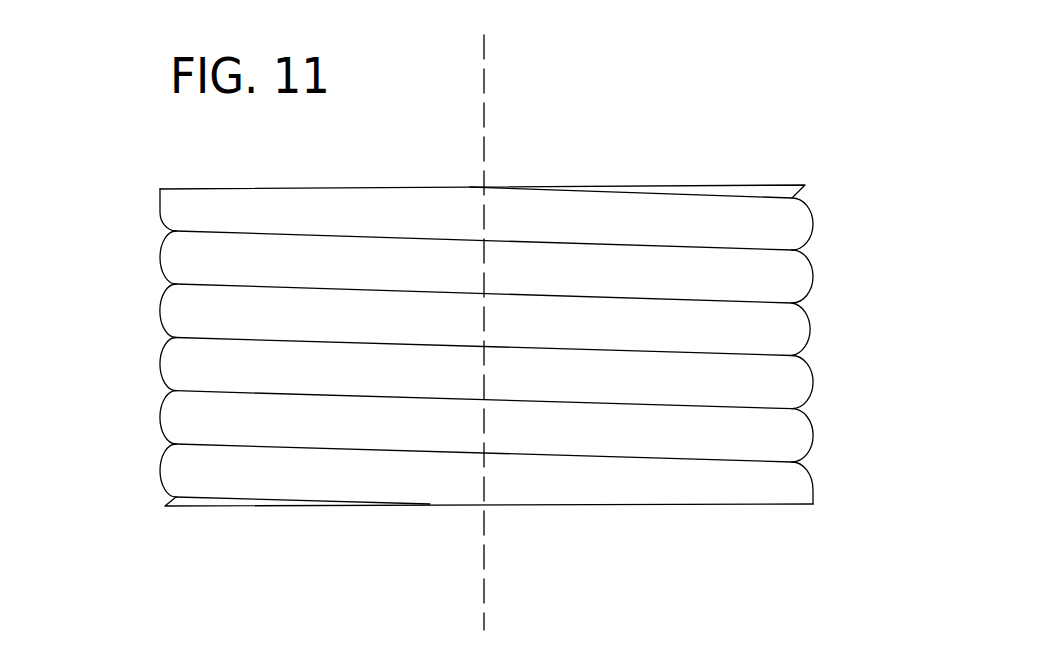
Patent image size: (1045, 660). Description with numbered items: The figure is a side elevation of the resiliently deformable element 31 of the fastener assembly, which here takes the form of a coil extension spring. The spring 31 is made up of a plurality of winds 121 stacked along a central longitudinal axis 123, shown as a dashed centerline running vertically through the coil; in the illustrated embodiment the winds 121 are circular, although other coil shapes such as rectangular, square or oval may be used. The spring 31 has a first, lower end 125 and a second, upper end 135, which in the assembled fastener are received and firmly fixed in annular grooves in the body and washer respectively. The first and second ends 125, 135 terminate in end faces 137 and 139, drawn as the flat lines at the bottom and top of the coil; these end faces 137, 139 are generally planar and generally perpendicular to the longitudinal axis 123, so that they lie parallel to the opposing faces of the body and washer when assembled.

The resiliently deformable element 31 is at (667, 145).
The central longitudinal axis 123 is at (484, 105).
The end face 139 is at (745, 183).
The second end 135 is at (160, 209).
The winds 121 is at (812, 318).
The first end 125 is at (813, 481).
The end face 137 is at (285, 507).